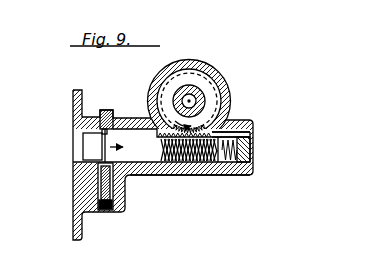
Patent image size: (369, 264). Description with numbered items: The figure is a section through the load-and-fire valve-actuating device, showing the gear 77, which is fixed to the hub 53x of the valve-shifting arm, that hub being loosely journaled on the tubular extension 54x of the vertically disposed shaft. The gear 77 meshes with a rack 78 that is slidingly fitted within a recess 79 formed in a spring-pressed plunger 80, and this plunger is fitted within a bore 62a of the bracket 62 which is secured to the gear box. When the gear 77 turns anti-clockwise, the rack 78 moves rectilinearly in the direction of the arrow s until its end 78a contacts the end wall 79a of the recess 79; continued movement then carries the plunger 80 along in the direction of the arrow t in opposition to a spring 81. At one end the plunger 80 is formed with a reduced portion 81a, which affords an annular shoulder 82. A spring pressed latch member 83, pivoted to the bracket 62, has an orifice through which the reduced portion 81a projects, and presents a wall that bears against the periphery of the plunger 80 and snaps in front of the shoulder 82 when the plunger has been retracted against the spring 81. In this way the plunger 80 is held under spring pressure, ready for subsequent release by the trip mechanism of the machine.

The gear 77 is at (150, 97).
The recess 79 is at (149, 119).
The spring pressed latch member 83 is at (101, 117).
The tubular extension 54x is at (197, 96).
The hub 53x is at (198, 108).
The end wall 79a is at (251, 135).
The spring 81 is at (251, 153).
The bracket 62 is at (252, 176).
The end of rack 78a is at (196, 138).
The spring-pressed plunger 80 is at (152, 158).
The bore 62a is at (140, 163).
The annular shoulder 82 is at (104, 144).
The reduced portion 81a is at (95, 152).
The rack 78 is at (163, 144).